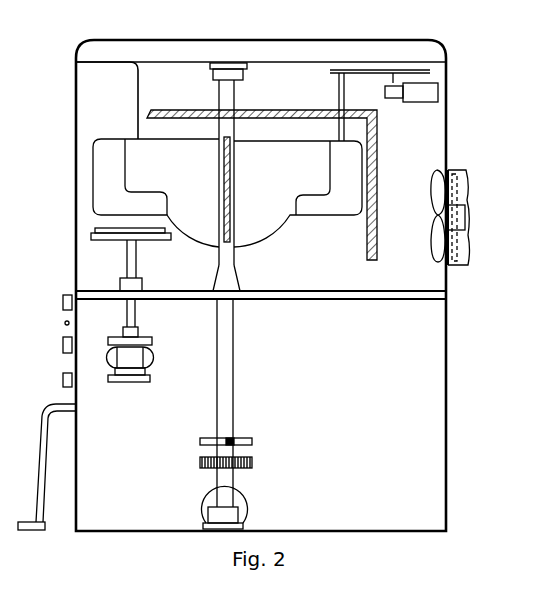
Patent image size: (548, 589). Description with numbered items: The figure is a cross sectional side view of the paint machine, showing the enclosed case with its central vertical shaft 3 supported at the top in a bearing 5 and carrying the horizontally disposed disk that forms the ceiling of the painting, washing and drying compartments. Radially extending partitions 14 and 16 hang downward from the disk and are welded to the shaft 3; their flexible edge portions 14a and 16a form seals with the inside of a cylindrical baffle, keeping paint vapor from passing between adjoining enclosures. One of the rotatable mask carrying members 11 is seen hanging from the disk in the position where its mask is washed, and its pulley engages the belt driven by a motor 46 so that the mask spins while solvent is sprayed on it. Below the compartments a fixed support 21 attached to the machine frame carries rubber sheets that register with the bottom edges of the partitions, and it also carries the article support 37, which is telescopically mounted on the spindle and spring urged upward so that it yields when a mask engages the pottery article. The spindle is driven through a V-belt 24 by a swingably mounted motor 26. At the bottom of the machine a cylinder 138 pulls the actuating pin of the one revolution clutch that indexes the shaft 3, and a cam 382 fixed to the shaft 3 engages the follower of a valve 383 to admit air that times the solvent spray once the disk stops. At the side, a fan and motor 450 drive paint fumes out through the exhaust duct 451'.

The shaft 3 is at (236, 95).
The bearing 5 is at (212, 70).
The rotatable mask carrying member 11 is at (338, 80).
The partition 14 is at (317, 184).
The flexible edge portion 14a is at (325, 178).
The partition 16 is at (186, 170).
The flexible edge portion 16a is at (133, 177).
The support 21 is at (178, 299).
The V-belt 24 is at (145, 337).
The motor 26 is at (155, 358).
The article support 37 is at (164, 243).
The motor 46 is at (434, 102).
The cylinder 138 is at (245, 506).
The cam 382 is at (252, 441).
The valve 383 is at (232, 439).
The fan and motor 450 is at (428, 258).
The duct 451' is at (478, 218).